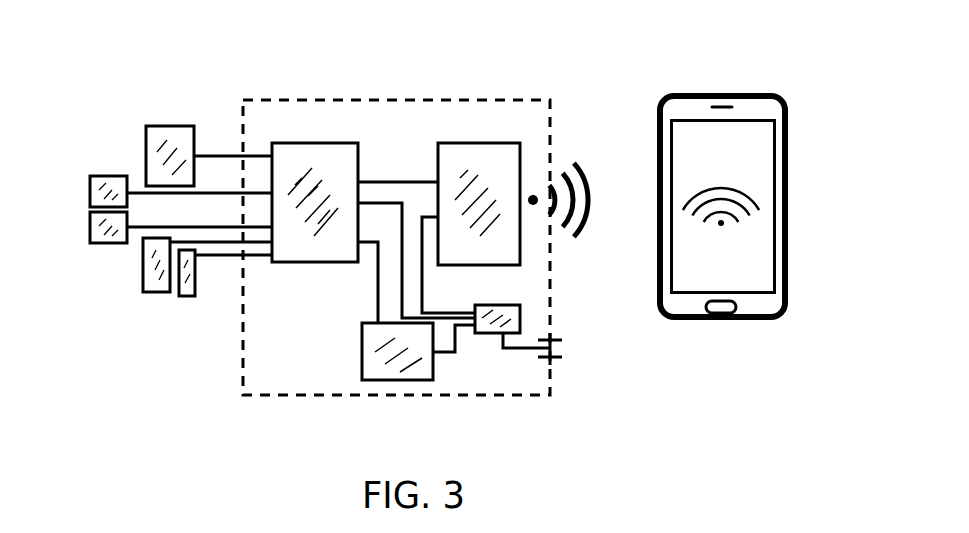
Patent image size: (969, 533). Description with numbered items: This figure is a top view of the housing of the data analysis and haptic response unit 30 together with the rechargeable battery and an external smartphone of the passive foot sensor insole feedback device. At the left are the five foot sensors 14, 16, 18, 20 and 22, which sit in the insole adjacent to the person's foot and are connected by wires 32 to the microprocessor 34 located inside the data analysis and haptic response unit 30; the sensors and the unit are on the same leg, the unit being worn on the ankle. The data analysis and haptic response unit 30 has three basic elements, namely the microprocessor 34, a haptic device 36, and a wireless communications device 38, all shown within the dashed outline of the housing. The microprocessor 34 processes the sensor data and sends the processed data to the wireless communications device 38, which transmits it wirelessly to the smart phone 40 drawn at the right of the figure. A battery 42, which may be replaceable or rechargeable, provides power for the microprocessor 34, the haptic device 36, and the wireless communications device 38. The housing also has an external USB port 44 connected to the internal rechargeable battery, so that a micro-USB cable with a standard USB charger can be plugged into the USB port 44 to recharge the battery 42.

The foot sensor 14 is at (159, 122).
The foot sensor 16 is at (110, 170).
The foot sensor 18 is at (112, 253).
The foot sensor 20 is at (158, 298).
The foot sensor 22 is at (186, 298).
The data analysis and haptic response unit 30 is at (552, 96).
The wires 32 is at (219, 150).
The microprocessor 34 is at (327, 155).
The haptic device 36 is at (387, 377).
The wireless communications device 38 is at (461, 160).
The smart phone 40 is at (744, 78).
The battery 42 is at (520, 318).
The USB port 44 is at (563, 348).